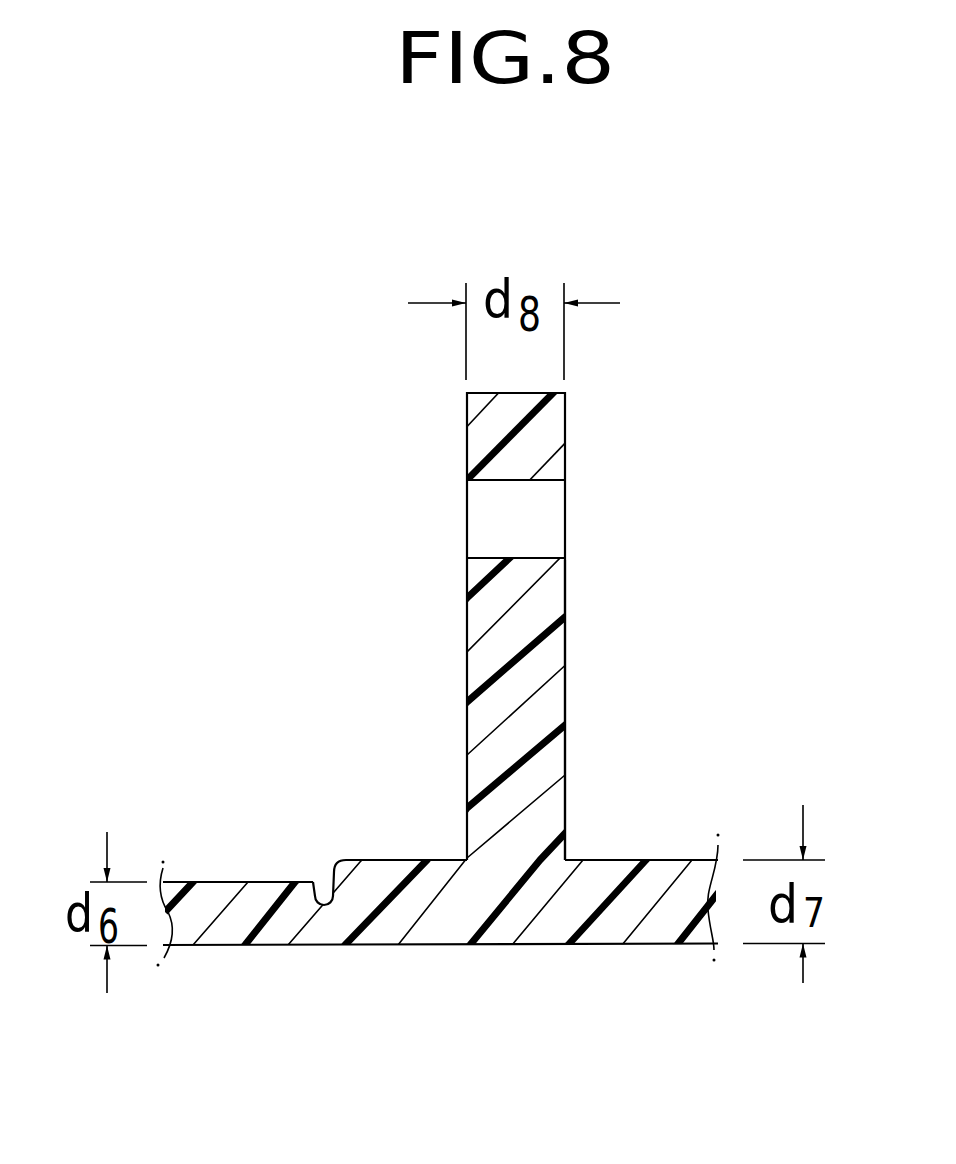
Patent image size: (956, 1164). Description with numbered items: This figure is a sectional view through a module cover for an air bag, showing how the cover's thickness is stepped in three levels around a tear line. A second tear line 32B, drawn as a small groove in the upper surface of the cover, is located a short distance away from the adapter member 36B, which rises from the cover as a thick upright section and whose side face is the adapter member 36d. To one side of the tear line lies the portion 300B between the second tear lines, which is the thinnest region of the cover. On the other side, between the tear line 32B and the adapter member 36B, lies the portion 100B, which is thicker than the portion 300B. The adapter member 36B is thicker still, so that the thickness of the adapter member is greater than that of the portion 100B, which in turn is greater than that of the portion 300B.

The adapter member 36B is at (565, 632).
The adapter member 36d is at (565, 700).
The portion between the second tear lines 300B is at (222, 858).
The second tear line 32B is at (327, 890).
The portion outside the second tear line 100B is at (392, 843).